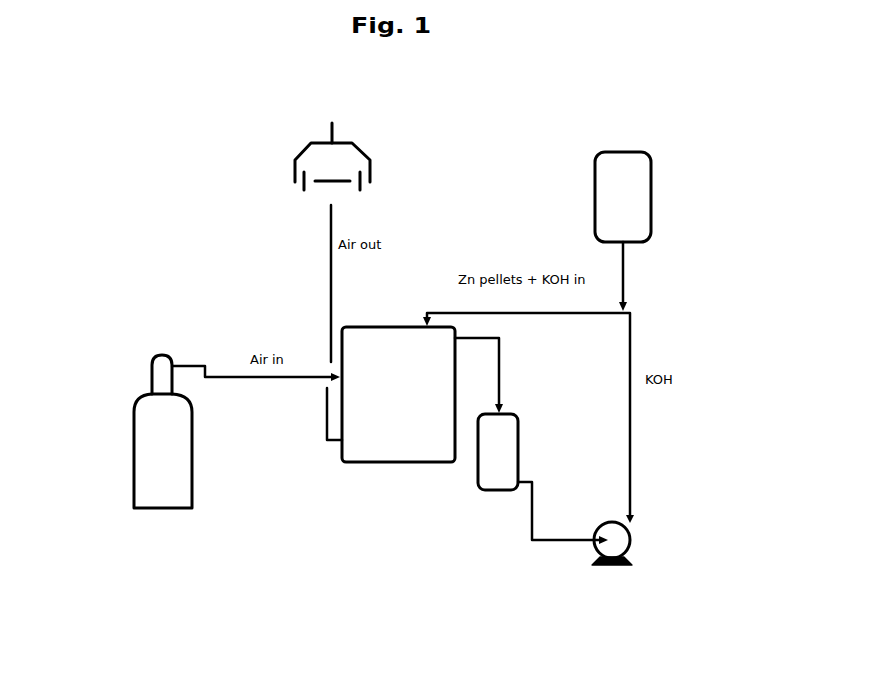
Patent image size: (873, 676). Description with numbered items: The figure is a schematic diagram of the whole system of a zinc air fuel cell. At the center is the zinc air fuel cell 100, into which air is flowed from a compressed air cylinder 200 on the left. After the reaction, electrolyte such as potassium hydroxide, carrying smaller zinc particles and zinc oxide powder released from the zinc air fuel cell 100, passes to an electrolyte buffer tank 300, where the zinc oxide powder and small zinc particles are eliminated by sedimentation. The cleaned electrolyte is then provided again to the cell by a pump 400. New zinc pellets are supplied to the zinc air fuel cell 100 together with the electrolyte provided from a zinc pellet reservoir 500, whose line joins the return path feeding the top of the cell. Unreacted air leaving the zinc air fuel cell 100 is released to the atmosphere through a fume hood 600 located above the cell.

The zinc air fuel cell 100 is at (360, 463).
The compressed air cylinder 200 is at (133, 500).
The electrolyte buffer tank 300 is at (497, 493).
The pump 400 is at (632, 543).
The zinc pellet reservoir 500 is at (651, 213).
The fume hood 600 is at (370, 160).